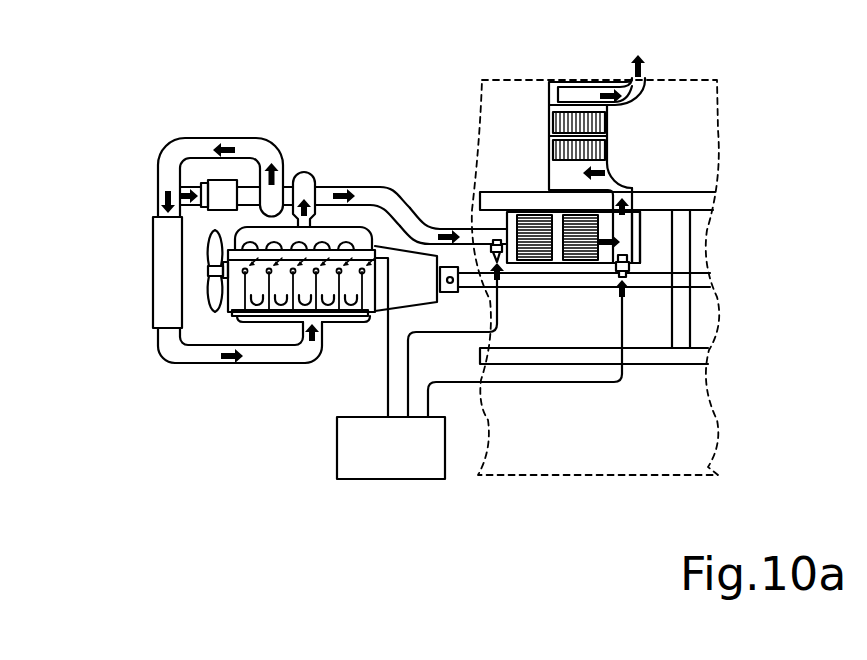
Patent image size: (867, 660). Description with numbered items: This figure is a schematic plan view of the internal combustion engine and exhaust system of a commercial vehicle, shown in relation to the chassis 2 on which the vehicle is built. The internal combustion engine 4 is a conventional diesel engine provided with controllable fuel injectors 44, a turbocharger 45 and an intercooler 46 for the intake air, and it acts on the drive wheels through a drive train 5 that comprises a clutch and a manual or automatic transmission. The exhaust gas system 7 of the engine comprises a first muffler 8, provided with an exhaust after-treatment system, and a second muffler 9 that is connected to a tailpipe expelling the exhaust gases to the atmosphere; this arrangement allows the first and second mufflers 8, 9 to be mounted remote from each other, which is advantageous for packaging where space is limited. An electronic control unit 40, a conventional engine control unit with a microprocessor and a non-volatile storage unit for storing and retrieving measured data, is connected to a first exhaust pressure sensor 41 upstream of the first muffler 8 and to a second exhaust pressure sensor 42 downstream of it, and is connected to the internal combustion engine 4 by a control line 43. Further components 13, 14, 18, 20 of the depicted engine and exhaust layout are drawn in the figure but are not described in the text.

The chassis 2 is at (670, 195).
The internal combustion engine 4 is at (267, 320).
The drive train 5 is at (710, 277).
The exhaust gas system 7 is at (353, 180).
The first muffler 8 is at (557, 277).
The second muffler 9 is at (548, 107).
The coolant passage 13 is at (423, 227).
The exhaust gas passage 14 is at (627, 237).
The first heat exchange section 18 is at (532, 277).
The second heat exchange section 20 is at (583, 277).
The electronic control unit 40 is at (377, 480).
The first exhaust pressure sensor 41 is at (493, 238).
The second exhaust pressure sensor 42 is at (627, 270).
The control line 43 is at (388, 350).
The fuel injectors 44 is at (243, 290).
The turbocharger 45 is at (293, 170).
The intercooler 46 is at (157, 263).